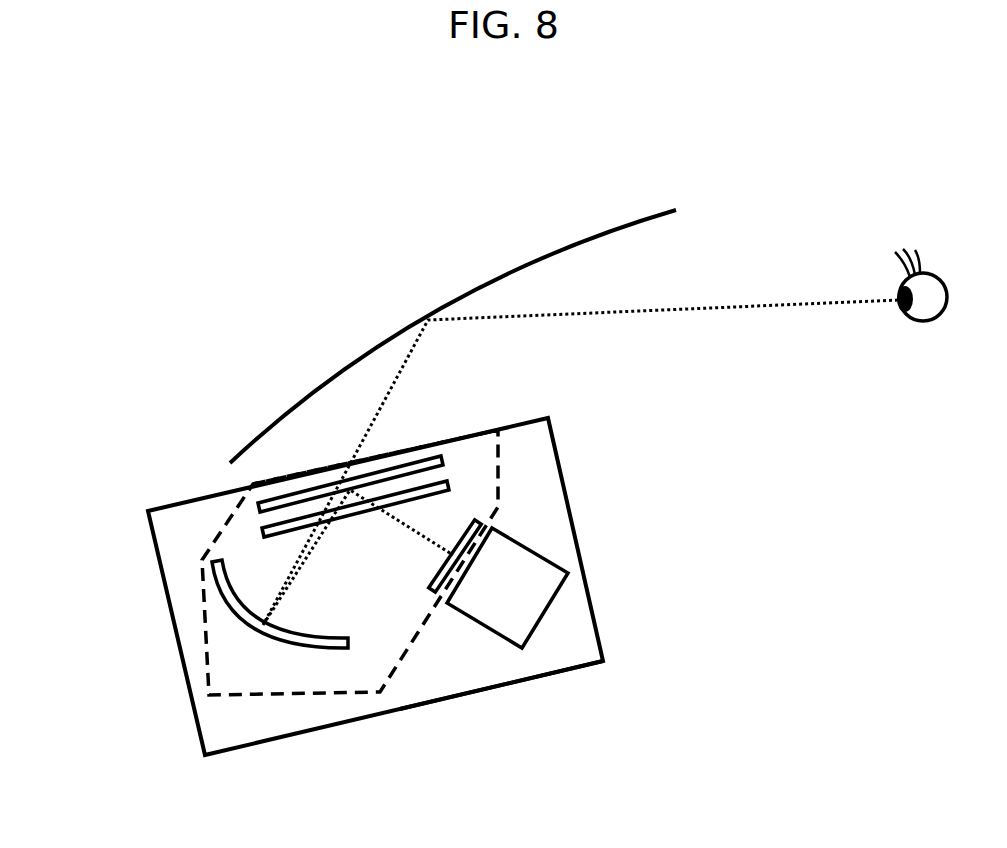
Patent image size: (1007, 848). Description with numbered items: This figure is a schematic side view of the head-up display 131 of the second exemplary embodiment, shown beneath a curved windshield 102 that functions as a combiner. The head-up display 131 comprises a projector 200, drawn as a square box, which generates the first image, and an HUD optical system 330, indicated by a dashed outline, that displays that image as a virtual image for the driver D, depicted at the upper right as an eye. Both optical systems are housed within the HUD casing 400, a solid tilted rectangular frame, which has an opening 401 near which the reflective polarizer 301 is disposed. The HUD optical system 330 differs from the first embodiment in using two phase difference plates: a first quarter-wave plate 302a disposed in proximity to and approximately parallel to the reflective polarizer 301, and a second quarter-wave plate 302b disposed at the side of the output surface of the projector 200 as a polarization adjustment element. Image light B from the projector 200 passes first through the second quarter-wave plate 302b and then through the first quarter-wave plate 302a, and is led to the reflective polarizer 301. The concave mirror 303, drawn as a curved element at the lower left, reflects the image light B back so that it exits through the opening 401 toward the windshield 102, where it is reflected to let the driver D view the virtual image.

The windshield 102 is at (520, 270).
The driver D is at (935, 298).
The HUD casing 400 is at (450, 702).
The head-up display 131 is at (562, 640).
The HUD optical system 330 is at (255, 695).
The opening 401 is at (397, 448).
The reflective polarizer 301 is at (262, 500).
The first quarter-wave plate 302a is at (262, 530).
The second quarter-wave plate 302b is at (475, 518).
The projector 200 is at (530, 548).
The concave mirror 303 is at (223, 603).
The image light B is at (407, 525).